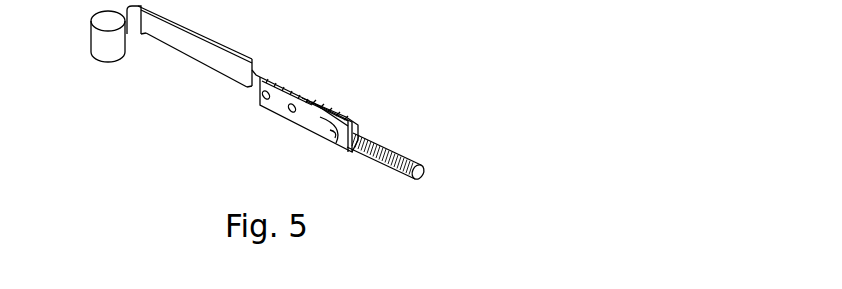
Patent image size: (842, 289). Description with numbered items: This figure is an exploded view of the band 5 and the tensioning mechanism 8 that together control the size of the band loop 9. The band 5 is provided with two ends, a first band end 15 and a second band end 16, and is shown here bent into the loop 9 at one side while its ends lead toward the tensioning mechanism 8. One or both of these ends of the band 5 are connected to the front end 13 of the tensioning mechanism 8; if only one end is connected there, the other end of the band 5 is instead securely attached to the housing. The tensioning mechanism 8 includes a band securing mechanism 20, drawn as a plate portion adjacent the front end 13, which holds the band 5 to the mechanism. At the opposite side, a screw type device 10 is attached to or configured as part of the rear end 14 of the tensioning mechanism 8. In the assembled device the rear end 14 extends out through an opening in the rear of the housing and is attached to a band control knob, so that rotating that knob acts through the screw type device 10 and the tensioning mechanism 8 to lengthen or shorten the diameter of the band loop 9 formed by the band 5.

The band loop 9 is at (106, 45).
The band 5 is at (218, 30).
The second band end 16 is at (245, 70).
The first band end 15 is at (260, 77).
The front end of tensioning mechanism 13 is at (266, 76).
The band securing mechanism 20 is at (259, 104).
The tensioning mechanism 8 is at (373, 114).
The screw type device 10 is at (400, 152).
The rear end of tensioning mechanism 14 is at (426, 176).